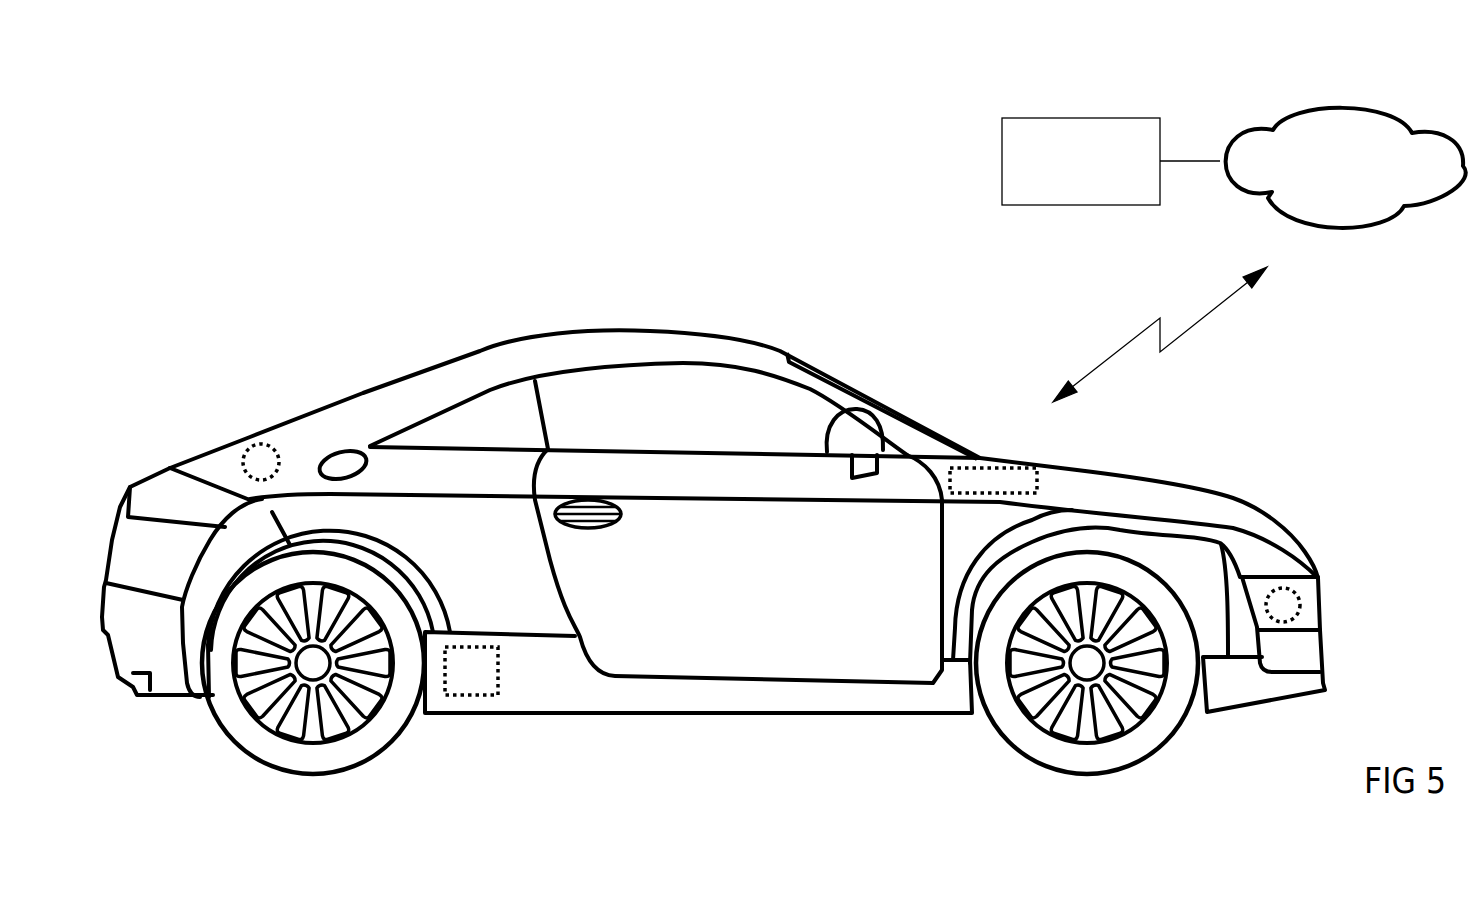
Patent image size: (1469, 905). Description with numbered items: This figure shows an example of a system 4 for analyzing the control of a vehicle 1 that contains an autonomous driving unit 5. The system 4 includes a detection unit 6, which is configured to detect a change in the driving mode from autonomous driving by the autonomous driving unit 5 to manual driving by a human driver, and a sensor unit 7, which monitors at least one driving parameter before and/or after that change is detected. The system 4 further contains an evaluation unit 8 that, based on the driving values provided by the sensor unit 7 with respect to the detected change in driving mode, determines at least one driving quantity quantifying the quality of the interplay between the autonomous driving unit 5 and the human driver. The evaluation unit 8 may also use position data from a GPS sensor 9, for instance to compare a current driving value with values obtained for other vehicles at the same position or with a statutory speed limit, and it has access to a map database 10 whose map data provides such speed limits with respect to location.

The vehicle 1 is at (803, 352).
The system 4 is at (397, 276).
The autonomous driving unit 5 is at (470, 696).
The detection unit 6 is at (1005, 463).
The sensor unit 7 is at (1308, 603).
The evaluation unit 8 is at (1320, 192).
The GPS sensor 9 is at (243, 440).
The map database 10 is at (1069, 182).